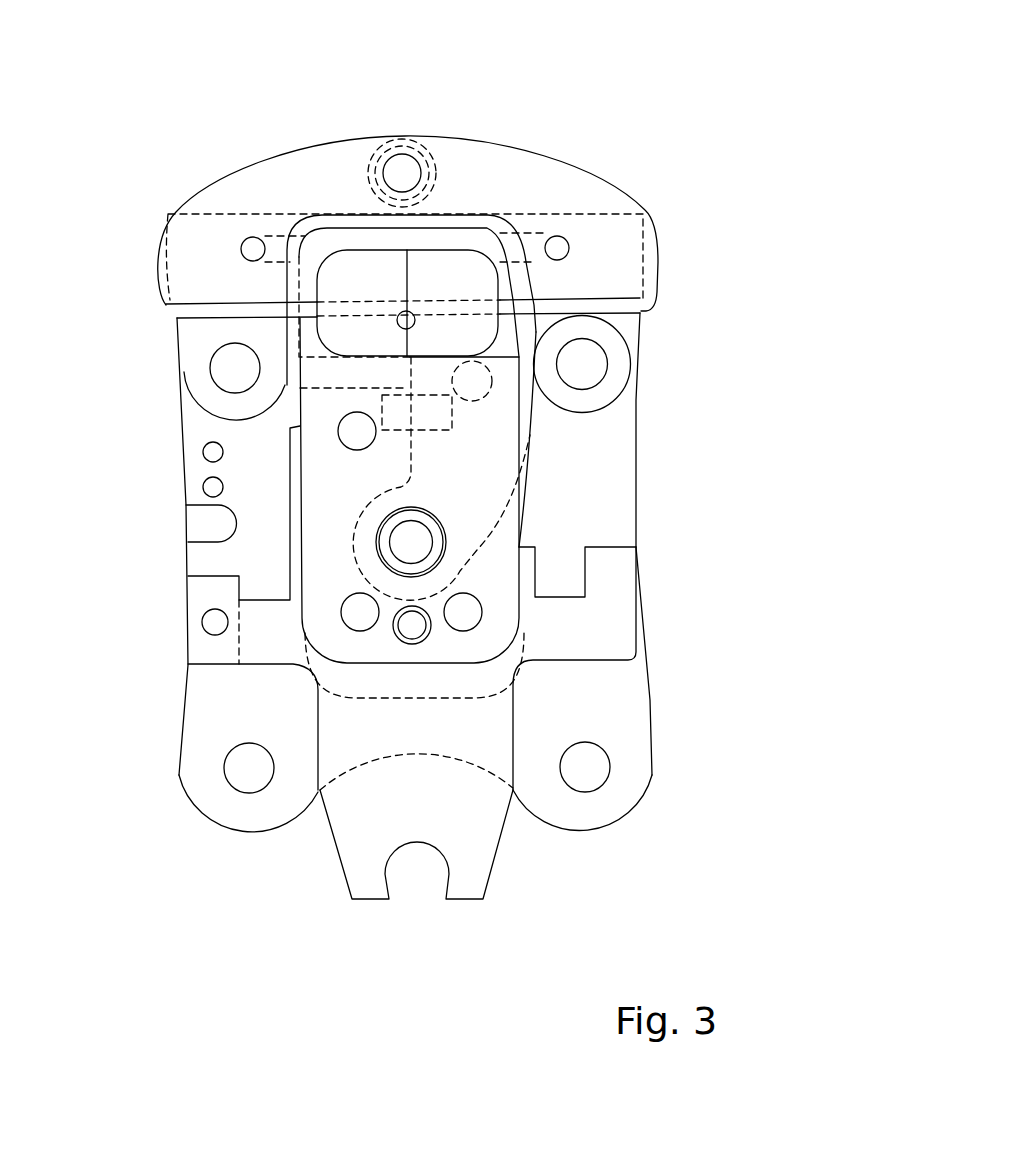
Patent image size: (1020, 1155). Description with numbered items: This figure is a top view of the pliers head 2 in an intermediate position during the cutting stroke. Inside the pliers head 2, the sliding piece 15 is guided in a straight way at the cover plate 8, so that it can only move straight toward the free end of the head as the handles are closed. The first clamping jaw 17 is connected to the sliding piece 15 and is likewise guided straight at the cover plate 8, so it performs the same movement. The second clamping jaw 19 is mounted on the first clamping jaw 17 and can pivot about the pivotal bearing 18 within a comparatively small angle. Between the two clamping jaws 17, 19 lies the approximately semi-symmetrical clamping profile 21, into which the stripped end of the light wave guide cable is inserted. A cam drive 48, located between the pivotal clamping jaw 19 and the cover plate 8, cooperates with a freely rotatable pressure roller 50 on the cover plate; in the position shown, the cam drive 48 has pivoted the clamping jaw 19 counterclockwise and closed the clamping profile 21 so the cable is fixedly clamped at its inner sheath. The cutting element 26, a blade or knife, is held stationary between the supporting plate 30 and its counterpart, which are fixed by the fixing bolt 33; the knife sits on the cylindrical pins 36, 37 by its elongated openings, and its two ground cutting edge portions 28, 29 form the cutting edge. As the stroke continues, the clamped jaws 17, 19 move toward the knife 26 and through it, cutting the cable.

The pliers head 2 is at (712, 270).
The cover plate 8 is at (586, 514).
The sliding piece 15 is at (462, 822).
The first clamping jaw 17 is at (320, 462).
The pivotal bearing 18 is at (412, 542).
The second clamping jaw 19 is at (467, 459).
The clamping profile 21 is at (398, 325).
The cutting element 26 is at (341, 228).
The cutting edge portion 28 is at (448, 298).
The cutting edge portion 29 is at (467, 188).
The supporting plate 30 is at (540, 182).
The fixing bolt 33 is at (401, 173).
The cylindrical pin 36 is at (246, 238).
The cylindrical pin 37 is at (560, 238).
The cam drive 48 is at (545, 412).
The pressure roller 50 is at (622, 362).